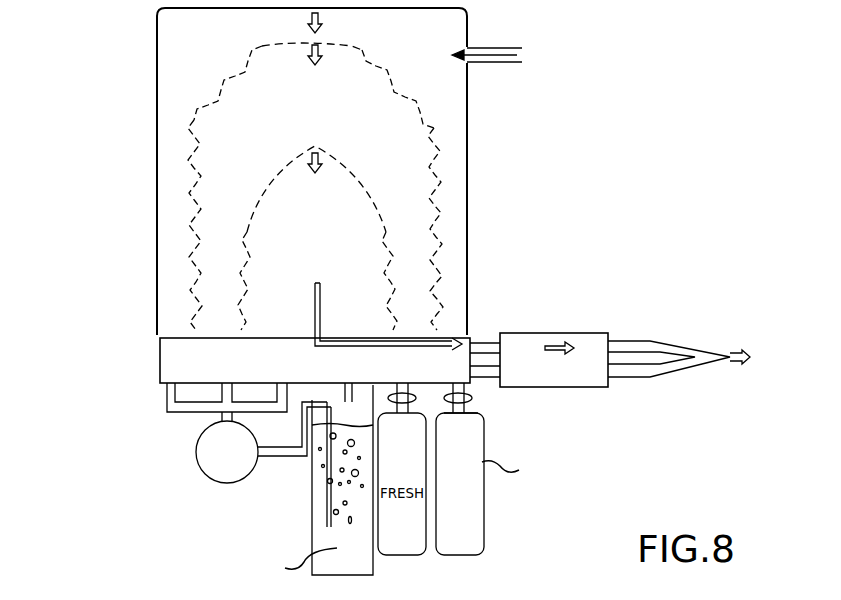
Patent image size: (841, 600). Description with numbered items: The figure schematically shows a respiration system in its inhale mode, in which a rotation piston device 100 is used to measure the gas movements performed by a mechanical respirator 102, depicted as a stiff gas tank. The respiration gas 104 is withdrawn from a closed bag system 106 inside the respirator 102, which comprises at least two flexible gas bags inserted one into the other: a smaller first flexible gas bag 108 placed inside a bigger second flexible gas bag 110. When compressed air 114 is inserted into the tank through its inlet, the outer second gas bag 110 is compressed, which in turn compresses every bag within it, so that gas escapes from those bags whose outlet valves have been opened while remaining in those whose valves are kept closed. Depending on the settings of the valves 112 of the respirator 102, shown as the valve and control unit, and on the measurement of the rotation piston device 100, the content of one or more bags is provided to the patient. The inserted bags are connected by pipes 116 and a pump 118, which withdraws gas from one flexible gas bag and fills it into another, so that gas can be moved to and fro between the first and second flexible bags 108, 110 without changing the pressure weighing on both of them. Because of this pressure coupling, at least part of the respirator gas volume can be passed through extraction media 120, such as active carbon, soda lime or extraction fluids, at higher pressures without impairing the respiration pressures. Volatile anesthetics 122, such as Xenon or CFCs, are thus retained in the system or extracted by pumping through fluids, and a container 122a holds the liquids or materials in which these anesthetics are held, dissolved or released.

The rotation piston device 100 is at (580, 333).
The mechanical respirator 102 is at (145, 128).
The respiration gas 104 is at (462, 335).
The closed bag system 106 is at (157, 205).
The first flexible gas bag 108 is at (356, 174).
The second flexible gas bag 110 is at (384, 72).
The valves 112 is at (160, 358).
The compressed air 114 is at (485, 60).
The pipes 116 is at (182, 414).
The pump 118 is at (214, 483).
The extraction media 120 is at (316, 494).
The volatile anesthetics 122 is at (484, 516).
The container 122a is at (482, 420).